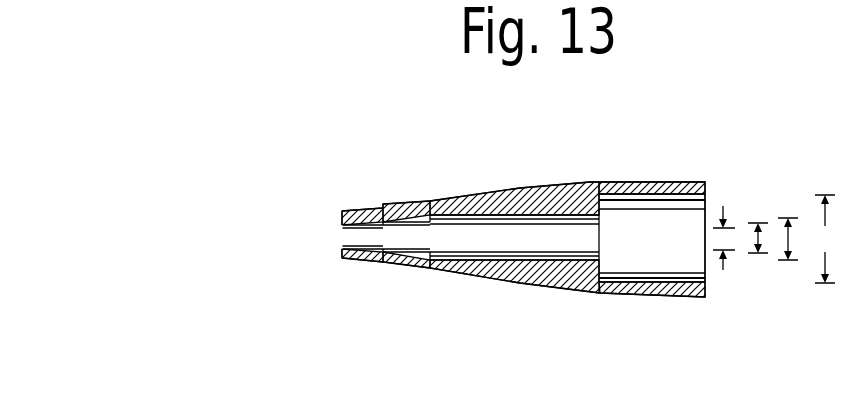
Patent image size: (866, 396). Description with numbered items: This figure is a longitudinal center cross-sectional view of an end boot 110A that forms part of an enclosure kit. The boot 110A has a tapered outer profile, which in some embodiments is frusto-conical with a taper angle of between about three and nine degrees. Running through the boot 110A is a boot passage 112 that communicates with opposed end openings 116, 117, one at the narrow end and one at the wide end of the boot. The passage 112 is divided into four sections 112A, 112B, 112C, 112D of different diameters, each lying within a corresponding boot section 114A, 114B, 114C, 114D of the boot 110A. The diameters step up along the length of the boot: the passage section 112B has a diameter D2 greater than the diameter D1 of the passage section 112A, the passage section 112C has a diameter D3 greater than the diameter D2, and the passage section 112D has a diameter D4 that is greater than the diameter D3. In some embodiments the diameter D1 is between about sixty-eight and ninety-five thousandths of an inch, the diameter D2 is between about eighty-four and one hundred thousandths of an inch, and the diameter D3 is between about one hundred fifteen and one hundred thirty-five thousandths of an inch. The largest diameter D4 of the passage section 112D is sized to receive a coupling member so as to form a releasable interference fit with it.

The end boot 110A is at (529, 211).
The boot passage 112 is at (520, 253).
The passage section 112A is at (366, 238).
The passage section 112B is at (415, 235).
The passage section 112C is at (575, 242).
The passage section 112D is at (660, 275).
The boot section 114A is at (360, 209).
The boot section 114B is at (423, 203).
The boot section 114C is at (474, 193).
The boot section 114D is at (677, 182).
The end opening 116 is at (669, 223).
The end opening 117 is at (345, 238).
The diameter D1 is at (723, 270).
The diameter D2 is at (757, 254).
The diameter D3 is at (788, 262).
The diameter D4 is at (826, 239).